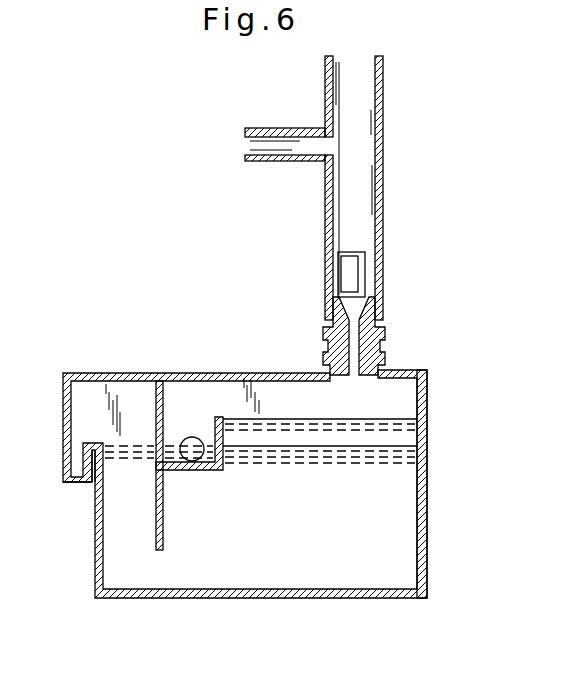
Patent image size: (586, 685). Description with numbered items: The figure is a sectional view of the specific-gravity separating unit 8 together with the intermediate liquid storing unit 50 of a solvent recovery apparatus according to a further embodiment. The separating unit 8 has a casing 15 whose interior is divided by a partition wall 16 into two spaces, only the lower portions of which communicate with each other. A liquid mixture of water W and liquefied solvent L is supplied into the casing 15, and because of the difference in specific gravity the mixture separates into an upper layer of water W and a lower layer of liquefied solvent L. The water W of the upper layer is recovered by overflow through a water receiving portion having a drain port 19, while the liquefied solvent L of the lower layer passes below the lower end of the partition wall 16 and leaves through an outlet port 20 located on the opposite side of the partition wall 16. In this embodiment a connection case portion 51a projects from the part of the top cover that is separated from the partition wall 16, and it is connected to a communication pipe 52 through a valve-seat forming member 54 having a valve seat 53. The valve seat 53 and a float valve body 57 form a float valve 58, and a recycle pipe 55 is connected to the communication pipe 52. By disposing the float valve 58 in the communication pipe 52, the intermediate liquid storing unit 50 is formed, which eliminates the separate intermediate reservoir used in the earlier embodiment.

The specific-gravity separating unit 8 is at (96, 573).
The casing 15 is at (428, 562).
The partition wall 16 is at (153, 421).
The drain port 19 is at (188, 437).
The outlet port 20 is at (77, 482).
The intermediate liquid storing unit 50 is at (352, 236).
The connection case portion 51a is at (319, 350).
The communication pipe 52 is at (384, 120).
The valve seat 53 is at (360, 282).
The valve-seat forming member 54 is at (384, 358).
The recycle pipe 55 is at (272, 128).
The float valve body 57 is at (357, 268).
The float valve 58 is at (462, 217).
The water W is at (272, 428).
The liquefied solvent L is at (338, 550).